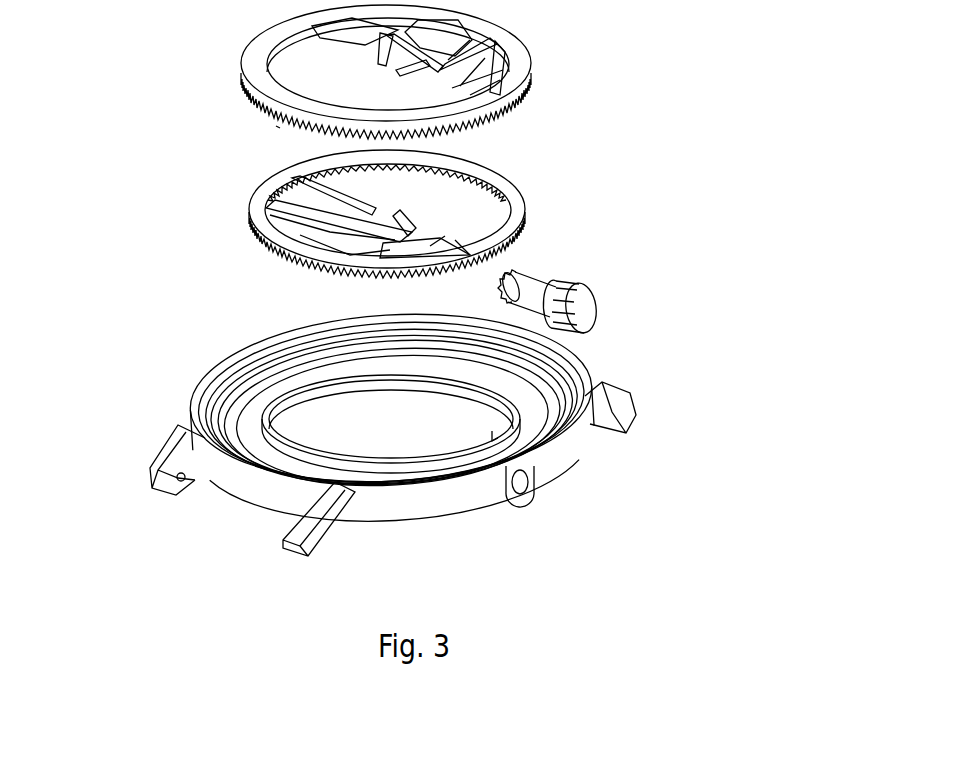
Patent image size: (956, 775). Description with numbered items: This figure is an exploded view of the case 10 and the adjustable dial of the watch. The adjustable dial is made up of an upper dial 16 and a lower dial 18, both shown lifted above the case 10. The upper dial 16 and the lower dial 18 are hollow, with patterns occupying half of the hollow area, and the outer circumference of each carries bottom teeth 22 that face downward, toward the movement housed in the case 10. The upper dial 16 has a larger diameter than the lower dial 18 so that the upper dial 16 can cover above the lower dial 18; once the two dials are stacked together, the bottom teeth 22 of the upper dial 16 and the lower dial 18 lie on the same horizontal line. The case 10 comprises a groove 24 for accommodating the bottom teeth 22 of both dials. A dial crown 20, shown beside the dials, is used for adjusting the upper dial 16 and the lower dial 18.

The case 10 is at (247, 485).
The upper dial 16 is at (508, 72).
The lower dial 18 is at (508, 205).
The dial crown 20 is at (573, 303).
The bottom teeth 22 is at (253, 228).
The groove 24 is at (528, 402).